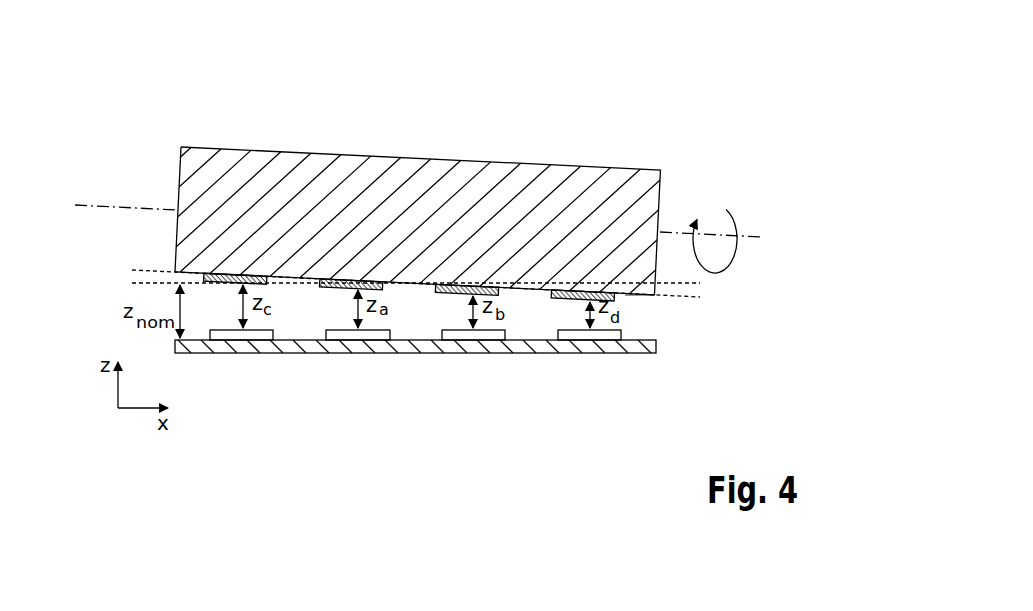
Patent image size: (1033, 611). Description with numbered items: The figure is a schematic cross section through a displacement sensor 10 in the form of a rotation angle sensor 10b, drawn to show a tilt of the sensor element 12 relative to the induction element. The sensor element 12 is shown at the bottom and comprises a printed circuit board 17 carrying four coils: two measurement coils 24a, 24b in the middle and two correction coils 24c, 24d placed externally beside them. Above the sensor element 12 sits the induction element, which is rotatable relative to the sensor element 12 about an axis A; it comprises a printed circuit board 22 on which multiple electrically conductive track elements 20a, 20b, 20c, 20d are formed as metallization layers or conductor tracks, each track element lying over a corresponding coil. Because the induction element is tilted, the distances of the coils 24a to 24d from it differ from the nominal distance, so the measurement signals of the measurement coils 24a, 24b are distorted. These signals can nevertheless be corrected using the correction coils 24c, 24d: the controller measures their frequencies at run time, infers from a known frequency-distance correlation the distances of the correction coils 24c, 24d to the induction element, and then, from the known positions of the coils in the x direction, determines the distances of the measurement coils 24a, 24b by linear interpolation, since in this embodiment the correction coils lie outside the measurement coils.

The displacement sensor 10 is at (416, 185).
The rotation angle sensor 10b is at (670, 148).
The sensor element 12 is at (462, 380).
The printed circuit board 17 is at (528, 346).
The track element 20a is at (368, 281).
The track element 20b is at (484, 290).
The track element 20c is at (255, 275).
The track element 20d is at (600, 297).
The printed circuit board 22 is at (641, 294).
The measurement coil 24a is at (358, 336).
The measurement coil 24b is at (473, 337).
The correction coil 24c is at (242, 338).
The correction coil 24d is at (590, 337).
The axis A is at (765, 236).